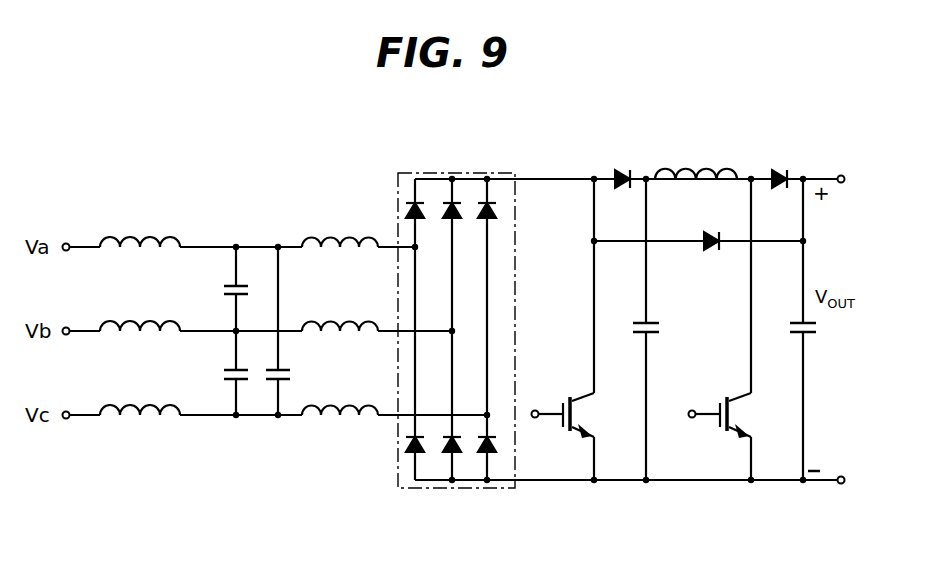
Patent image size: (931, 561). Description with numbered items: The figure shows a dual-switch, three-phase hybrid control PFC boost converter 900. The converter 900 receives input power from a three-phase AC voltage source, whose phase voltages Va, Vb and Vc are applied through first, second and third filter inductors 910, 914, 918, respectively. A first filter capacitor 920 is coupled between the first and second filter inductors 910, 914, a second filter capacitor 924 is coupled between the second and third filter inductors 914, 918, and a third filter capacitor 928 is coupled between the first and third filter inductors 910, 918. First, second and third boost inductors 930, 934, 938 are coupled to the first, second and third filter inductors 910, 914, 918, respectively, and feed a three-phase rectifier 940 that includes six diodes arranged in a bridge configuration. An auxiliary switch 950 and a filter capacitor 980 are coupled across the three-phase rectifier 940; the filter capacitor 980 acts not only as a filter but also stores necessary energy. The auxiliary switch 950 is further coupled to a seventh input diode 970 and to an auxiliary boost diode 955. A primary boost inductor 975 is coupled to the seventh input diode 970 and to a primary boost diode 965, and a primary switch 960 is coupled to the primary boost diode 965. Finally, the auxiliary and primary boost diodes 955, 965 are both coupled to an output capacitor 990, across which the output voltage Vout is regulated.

The dual-switch, three-phase hybrid control PFC boost converter 900 is at (148, 170).
The first filter inductor 910 is at (116, 236).
The second filter inductor 914 is at (116, 320).
The third filter inductor 918 is at (116, 404).
The first filter capacitor 920 is at (228, 277).
The second filter capacitor 924 is at (228, 361).
The third filter capacitor 928 is at (286, 368).
The first boost inductor 930 is at (335, 236).
The second boost inductor 934 is at (335, 320).
The third boost inductor 938 is at (351, 404).
The three-phase rectifier 940 is at (398, 455).
The auxiliary switch 950 is at (562, 409).
The auxiliary boost diode 955 is at (703, 249).
The primary switch 960 is at (722, 430).
The primary boost diode 965 is at (781, 170).
The seventh input diode 970 is at (619, 170).
The primary boost inductor 975 is at (692, 167).
The filter capacitor 980 is at (652, 336).
The output capacitor 990 is at (796, 321).